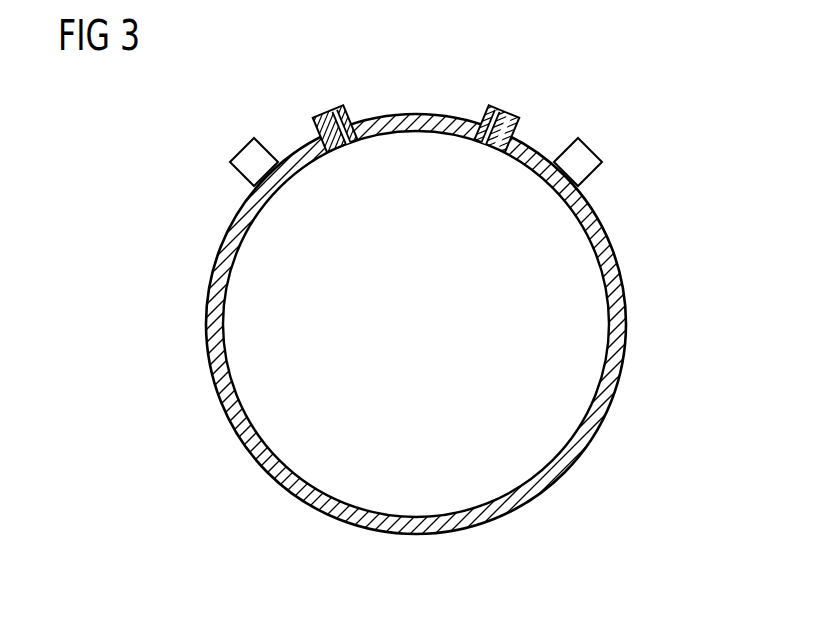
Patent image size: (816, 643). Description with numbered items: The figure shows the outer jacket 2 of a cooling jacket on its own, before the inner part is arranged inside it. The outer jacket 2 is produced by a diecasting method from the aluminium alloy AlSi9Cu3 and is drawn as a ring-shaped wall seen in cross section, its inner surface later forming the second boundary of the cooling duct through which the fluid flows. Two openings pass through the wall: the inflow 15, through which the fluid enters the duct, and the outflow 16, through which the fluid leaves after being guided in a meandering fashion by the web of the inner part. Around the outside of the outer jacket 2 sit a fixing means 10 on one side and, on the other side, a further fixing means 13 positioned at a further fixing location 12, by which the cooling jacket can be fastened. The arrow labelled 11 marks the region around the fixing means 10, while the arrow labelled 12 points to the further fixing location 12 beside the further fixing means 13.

The outer jacket 2 is at (410, 115).
The fixing means 10 is at (250, 156).
The first sensor arrangement 11 is at (219, 124).
The further fixing location 12 is at (609, 124).
The further fixing means 13 is at (580, 152).
The inflow 15 is at (493, 104).
The outflow 16 is at (315, 113).